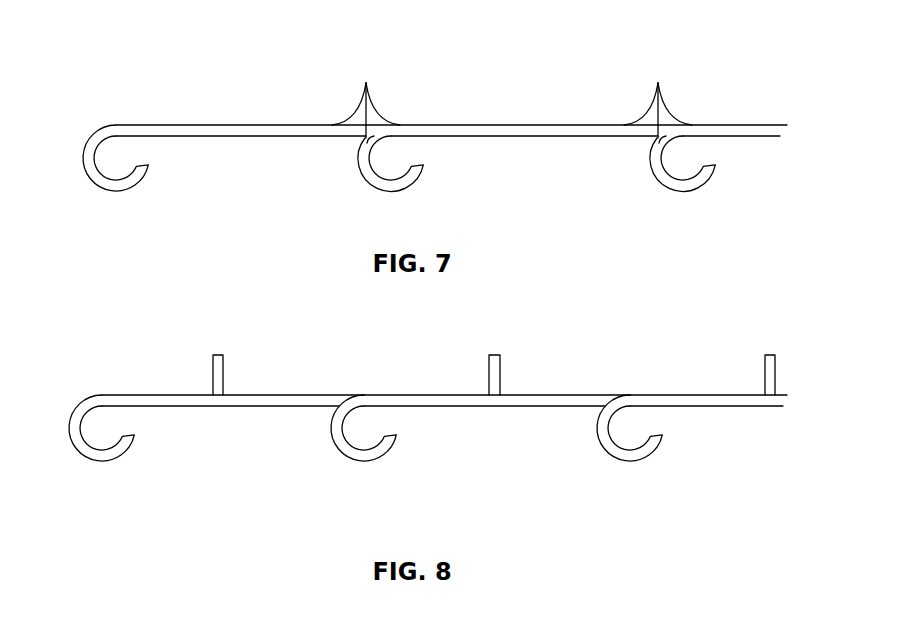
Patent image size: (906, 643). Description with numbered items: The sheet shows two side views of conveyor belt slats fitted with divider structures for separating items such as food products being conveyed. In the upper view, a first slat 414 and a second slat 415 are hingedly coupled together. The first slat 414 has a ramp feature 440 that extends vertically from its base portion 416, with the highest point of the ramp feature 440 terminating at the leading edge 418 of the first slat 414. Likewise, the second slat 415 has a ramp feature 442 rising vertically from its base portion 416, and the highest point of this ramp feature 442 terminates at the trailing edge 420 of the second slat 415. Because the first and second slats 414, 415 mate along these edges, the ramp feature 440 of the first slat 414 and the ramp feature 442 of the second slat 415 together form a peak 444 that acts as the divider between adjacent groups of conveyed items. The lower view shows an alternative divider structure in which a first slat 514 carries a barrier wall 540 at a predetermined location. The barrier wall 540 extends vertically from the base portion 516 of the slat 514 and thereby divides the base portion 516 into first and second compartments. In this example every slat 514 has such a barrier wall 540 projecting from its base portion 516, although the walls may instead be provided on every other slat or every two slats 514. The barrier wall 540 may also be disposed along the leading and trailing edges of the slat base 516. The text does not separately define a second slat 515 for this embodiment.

In FIG. 7, the first slat 414 is at (507, 160).
In FIG. 7, the second slat 415 is at (228, 148).
In FIG. 7, the base portion 416 is at (451, 147).
In FIG. 7, the leading edge 418 is at (87, 146).
In FIG. 7, the trailing edge 420 is at (363, 137).
In FIG. 7, the ramp feature 440 is at (377, 111).
In FIG. 7, the ramp feature 442 is at (345, 115).
In FIG. 7, the peak 444 is at (360, 75).
In FIG. 8, the first slat 514 is at (482, 455).
In FIG. 8, the first strip portion 515 is at (223, 450).
In FIG. 8, the base portion 516 is at (444, 458).
In FIG. 8, the barrier wall 540 is at (497, 374).